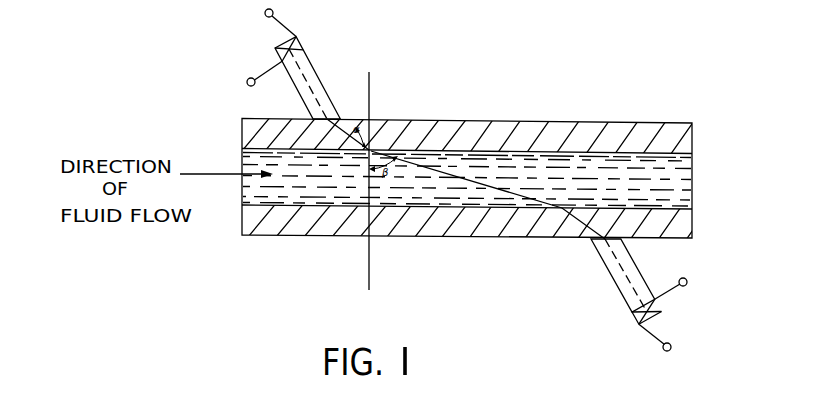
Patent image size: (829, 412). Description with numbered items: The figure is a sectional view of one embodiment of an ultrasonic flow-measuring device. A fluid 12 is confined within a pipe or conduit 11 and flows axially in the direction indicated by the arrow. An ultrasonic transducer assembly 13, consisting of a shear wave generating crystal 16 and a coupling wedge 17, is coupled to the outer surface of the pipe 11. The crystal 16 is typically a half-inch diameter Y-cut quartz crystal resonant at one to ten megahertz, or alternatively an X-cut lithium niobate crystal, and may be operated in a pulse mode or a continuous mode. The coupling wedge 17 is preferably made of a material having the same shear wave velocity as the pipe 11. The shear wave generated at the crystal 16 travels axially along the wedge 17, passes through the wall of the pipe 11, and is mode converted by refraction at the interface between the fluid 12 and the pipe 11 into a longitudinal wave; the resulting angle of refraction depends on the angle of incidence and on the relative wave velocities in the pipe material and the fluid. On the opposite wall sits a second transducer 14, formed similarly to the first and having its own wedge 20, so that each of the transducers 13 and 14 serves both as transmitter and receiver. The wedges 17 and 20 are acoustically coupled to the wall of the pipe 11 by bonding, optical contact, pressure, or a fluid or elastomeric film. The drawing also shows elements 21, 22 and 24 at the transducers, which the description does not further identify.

The pipe 11 is at (626, 122).
The fluid 12 is at (692, 172).
The ultrasonic transducer assembly 13 is at (361, 91).
The second transducer 14 is at (665, 276).
The shear wave generating crystal 16 is at (304, 47).
The coupling wedge 17 is at (297, 88).
The wedge 20 is at (619, 290).
The transducer crystal 21 is at (635, 323).
The electrical lead 22 is at (671, 345).
The electrical lead 24 is at (264, 13).